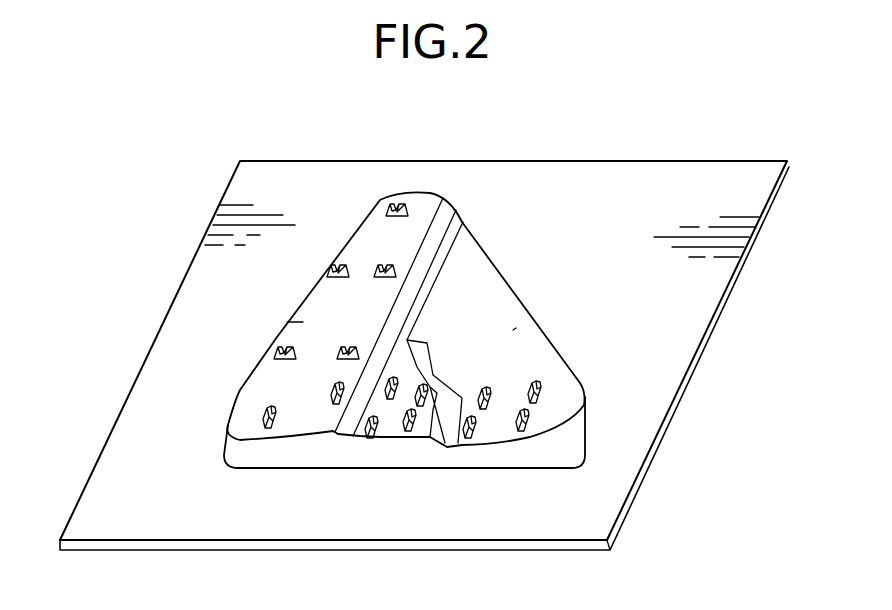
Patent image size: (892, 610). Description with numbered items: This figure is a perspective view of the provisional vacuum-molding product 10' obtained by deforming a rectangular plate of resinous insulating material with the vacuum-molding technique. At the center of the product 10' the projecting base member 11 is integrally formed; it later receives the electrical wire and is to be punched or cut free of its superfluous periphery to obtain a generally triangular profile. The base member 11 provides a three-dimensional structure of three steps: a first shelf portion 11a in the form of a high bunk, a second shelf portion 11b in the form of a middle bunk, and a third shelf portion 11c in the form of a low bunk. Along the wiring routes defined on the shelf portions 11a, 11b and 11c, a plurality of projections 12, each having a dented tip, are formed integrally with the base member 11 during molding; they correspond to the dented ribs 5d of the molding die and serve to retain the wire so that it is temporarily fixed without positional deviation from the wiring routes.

The provisional vacuum-molding product 10' is at (433, 355).
The base member 11 is at (504, 258).
The first shelf portion 11a is at (290, 322).
The second shelf portion 11b is at (388, 440).
The third shelf portion 11c is at (513, 330).
The projections 12 is at (338, 265).
The dented ribs 5d is at (447, 447).